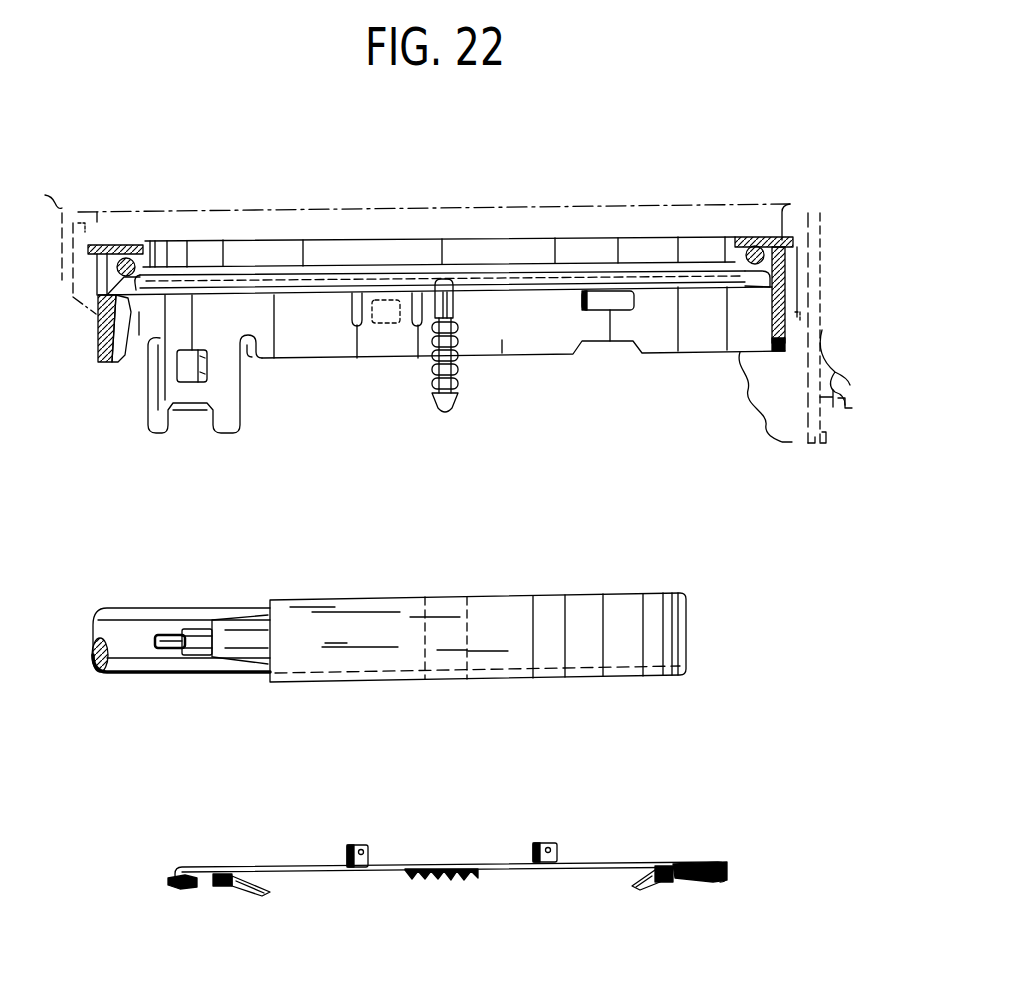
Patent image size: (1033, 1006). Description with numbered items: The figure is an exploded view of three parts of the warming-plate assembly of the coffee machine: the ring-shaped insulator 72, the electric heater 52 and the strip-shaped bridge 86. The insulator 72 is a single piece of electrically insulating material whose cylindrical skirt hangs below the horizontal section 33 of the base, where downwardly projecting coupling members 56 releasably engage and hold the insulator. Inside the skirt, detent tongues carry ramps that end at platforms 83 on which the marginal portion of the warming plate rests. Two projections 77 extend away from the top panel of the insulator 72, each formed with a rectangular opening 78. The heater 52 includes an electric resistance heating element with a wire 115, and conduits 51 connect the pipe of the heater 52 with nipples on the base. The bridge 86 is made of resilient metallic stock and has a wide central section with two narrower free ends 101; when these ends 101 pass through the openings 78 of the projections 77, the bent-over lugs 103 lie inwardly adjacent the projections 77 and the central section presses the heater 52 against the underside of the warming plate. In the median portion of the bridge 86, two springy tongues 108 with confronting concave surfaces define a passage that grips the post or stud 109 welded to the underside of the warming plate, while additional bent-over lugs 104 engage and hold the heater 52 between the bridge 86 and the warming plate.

The insulator 72 is at (597, 224).
The section 33 is at (822, 300).
The coupling member 56 is at (778, 298).
The retaining element 109 is at (457, 383).
The platform 83 is at (119, 365).
The projection 77 is at (240, 397).
The opening 78 is at (188, 368).
The electric heater 52 is at (532, 580).
The conduit 51 is at (165, 615).
The wire 115 is at (172, 644).
The bent-over lug 104 is at (367, 845).
The free end 101 is at (195, 884).
The bent-over lug 103 is at (178, 887).
The springy tongue 108 is at (430, 880).
The bridge 86 is at (362, 895).